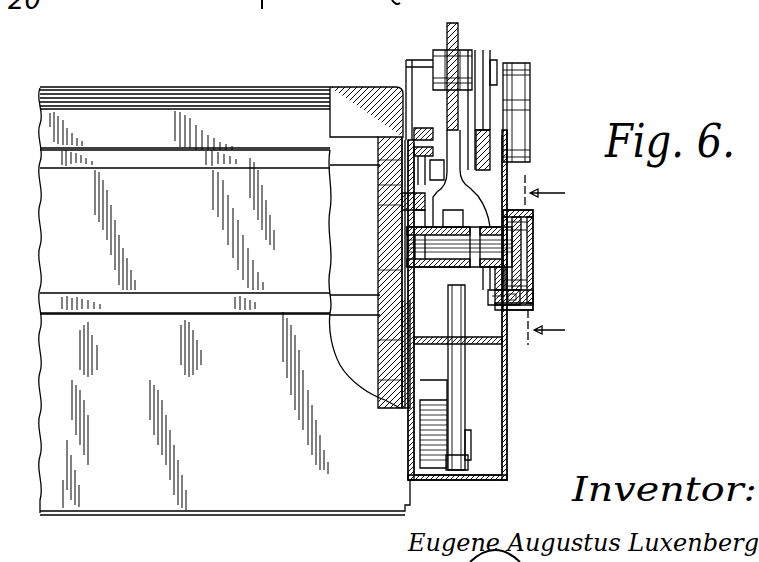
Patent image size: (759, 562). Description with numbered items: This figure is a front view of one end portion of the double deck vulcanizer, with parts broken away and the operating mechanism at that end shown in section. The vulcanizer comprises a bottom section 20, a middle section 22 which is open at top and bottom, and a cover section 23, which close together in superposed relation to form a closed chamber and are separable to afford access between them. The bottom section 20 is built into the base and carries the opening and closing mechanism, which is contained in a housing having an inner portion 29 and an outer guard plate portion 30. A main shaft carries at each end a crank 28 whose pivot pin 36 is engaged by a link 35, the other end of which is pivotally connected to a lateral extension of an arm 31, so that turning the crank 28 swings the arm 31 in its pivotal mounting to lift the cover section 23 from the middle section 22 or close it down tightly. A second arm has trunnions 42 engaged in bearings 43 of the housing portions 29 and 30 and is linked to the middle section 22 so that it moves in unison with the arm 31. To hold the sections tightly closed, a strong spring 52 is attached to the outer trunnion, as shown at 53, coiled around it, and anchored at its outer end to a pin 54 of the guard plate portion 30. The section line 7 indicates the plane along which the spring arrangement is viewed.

The section line 7- 7 is at (554, 262).
The bottom section 20 is at (137, 497).
The middle section 22 is at (186, 236).
The cover section 23 is at (143, 113).
The crank 28 is at (428, 430).
The inner portion 29 is at (395, 405).
The outer guard plate portion 30 is at (507, 398).
The arm 31 is at (460, 38).
The link 35 is at (460, 380).
The pivot pin 36 is at (472, 447).
The trunnions 42 is at (382, 245).
The bearings 43 is at (500, 227).
The spring 52 is at (514, 263).
The spring attachment 53 is at (535, 262).
The pin 54 is at (497, 288).